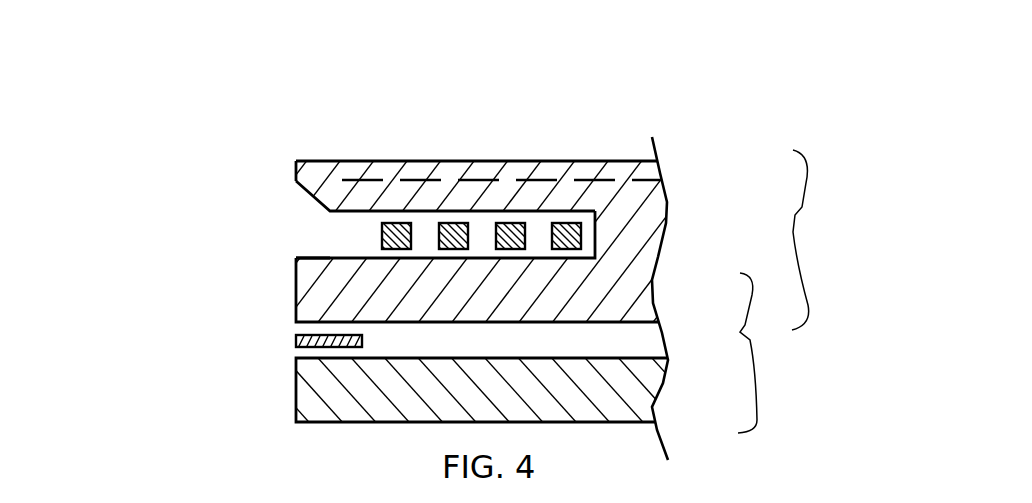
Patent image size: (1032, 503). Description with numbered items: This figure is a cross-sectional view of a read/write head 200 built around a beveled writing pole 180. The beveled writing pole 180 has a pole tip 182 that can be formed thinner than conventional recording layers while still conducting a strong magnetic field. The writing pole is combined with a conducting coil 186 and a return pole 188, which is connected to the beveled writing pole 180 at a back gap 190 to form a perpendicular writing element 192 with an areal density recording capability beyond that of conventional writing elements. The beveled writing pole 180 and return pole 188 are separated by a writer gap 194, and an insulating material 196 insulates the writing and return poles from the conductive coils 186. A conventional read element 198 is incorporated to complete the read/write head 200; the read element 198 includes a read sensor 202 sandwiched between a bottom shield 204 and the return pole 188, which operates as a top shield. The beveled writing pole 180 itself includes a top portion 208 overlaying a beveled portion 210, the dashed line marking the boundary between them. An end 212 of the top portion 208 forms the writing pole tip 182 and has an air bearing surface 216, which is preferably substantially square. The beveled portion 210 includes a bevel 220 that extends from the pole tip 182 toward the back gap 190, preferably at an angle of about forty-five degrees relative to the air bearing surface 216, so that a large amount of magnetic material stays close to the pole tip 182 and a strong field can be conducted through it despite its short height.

The beveled writing pole 180 is at (313, 122).
The pole tip 182 is at (295, 160).
The conducting coil 186 is at (562, 215).
The return pole 188 is at (292, 303).
The back gap 190 is at (648, 231).
The perpendicular writing element 192 is at (798, 215).
The writer gap 194 is at (305, 235).
The insulating material 196 is at (538, 227).
The read element 198 is at (742, 334).
The read/write head 200 is at (768, 111).
The read sensor 202 is at (293, 340).
The bottom shield 204 is at (329, 412).
The top portion 208 is at (380, 160).
The beveled portion 210 is at (500, 190).
The end 212 is at (296, 177).
The air bearing surface 216 is at (296, 171).
The bevel 220 is at (328, 208).